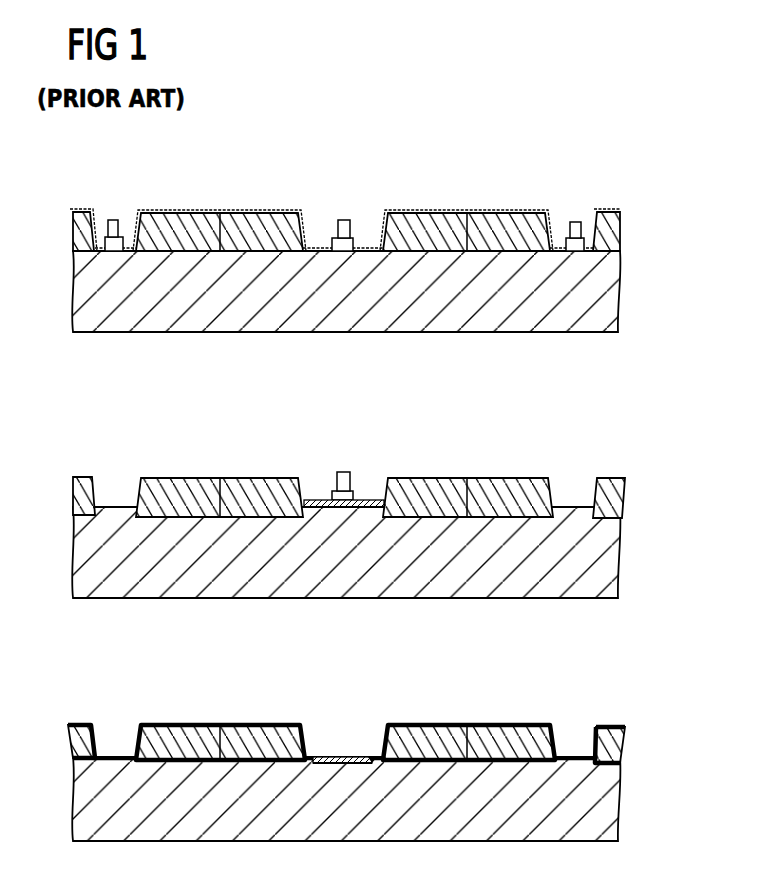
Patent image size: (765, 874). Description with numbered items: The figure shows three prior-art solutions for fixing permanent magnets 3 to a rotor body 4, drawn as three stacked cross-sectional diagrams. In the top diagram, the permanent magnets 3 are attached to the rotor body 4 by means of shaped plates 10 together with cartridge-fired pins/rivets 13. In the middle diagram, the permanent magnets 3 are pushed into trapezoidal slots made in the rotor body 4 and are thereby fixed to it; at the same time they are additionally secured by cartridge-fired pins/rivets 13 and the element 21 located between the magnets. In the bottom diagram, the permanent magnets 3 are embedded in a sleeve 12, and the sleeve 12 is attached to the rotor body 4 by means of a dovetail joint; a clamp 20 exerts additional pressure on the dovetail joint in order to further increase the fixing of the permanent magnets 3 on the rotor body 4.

The permanent magnets 3 is at (178, 212).
The rotor body 4 is at (603, 304).
The shaped plates 10 is at (367, 246).
The sleeve 12 is at (148, 724).
The cartridge-fired pins/rivets 13 is at (345, 205).
The clamp 20 is at (344, 756).
The element 21 is at (366, 498).